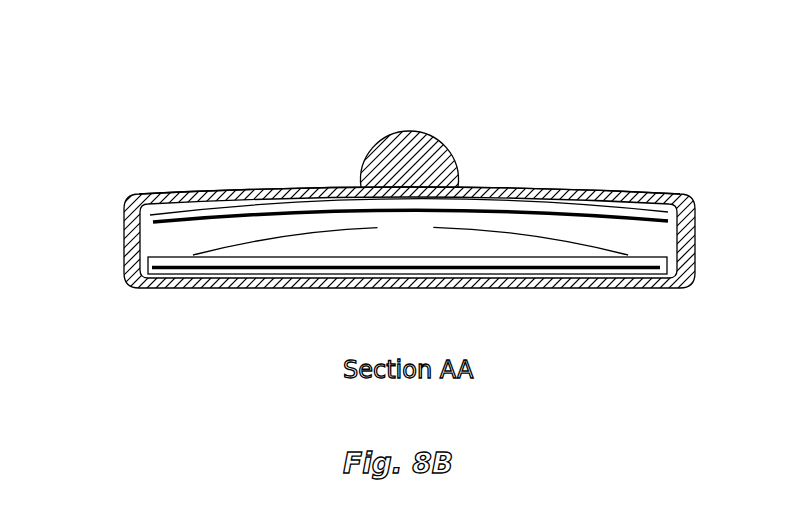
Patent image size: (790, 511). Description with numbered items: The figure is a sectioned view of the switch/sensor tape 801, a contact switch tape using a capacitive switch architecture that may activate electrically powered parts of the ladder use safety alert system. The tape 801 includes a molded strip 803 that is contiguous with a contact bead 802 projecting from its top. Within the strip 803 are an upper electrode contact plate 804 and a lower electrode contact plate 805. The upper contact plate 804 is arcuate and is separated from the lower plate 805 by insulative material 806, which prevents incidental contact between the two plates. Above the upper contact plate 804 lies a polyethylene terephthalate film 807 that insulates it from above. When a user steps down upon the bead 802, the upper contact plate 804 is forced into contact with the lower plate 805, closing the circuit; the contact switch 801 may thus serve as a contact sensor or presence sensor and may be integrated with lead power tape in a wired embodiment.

The switch/sensor tape 801 is at (549, 113).
The contact bead 802 is at (362, 166).
The molded strip 803 is at (123, 213).
The upper electrode contact plate 804 is at (542, 207).
The lower electrode contact plate 805 is at (382, 274).
The insulative material 806 is at (410, 237).
The polyethylene terephthalate (PET) film 807 is at (298, 207).